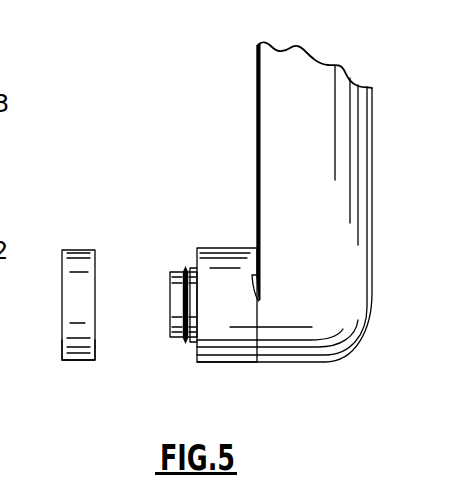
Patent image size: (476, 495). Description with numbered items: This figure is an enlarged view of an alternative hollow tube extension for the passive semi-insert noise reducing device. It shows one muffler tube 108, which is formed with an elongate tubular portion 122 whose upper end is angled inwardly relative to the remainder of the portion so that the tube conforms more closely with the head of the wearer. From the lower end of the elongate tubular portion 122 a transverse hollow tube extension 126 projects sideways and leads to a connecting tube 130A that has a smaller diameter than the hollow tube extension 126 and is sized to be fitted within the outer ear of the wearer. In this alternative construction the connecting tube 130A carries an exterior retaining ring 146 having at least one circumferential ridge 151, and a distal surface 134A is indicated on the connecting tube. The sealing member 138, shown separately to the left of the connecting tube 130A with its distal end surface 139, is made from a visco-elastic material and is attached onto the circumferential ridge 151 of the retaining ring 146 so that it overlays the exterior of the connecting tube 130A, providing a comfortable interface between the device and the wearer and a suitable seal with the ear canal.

The muffler tube 108 is at (377, 134).
The elongate tubular portion 122 is at (358, 268).
The hollow tube extension 126 is at (277, 333).
The connecting tube 130A is at (194, 337).
The circumferential ridge 151 is at (190, 268).
The exterior retaining ring 146 is at (182, 266).
The nut 134A is at (169, 283).
The sealing member 138 is at (76, 258).
The distal end surface 139 is at (60, 345).